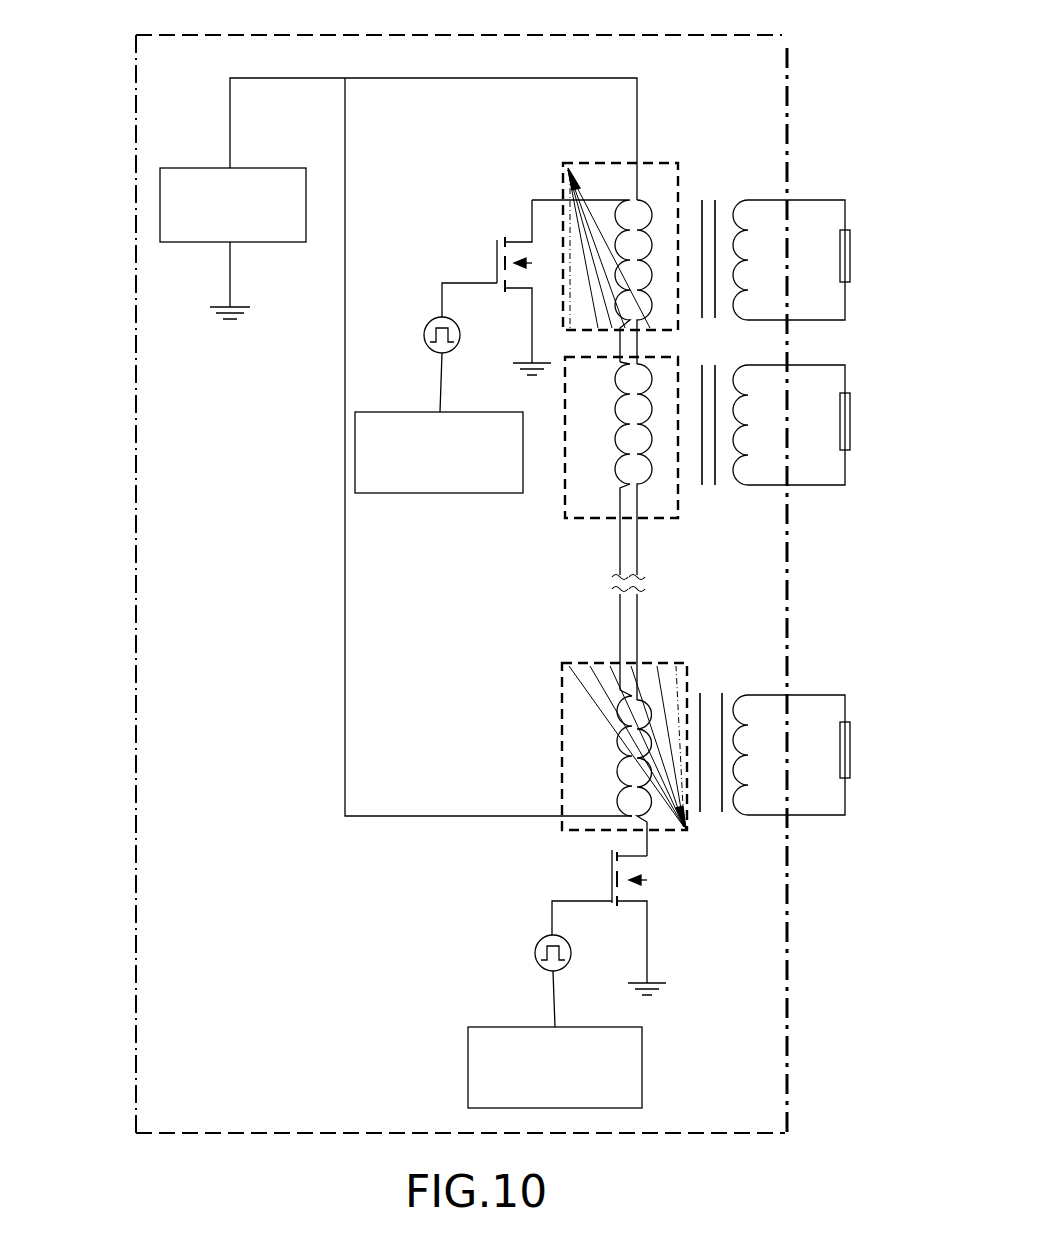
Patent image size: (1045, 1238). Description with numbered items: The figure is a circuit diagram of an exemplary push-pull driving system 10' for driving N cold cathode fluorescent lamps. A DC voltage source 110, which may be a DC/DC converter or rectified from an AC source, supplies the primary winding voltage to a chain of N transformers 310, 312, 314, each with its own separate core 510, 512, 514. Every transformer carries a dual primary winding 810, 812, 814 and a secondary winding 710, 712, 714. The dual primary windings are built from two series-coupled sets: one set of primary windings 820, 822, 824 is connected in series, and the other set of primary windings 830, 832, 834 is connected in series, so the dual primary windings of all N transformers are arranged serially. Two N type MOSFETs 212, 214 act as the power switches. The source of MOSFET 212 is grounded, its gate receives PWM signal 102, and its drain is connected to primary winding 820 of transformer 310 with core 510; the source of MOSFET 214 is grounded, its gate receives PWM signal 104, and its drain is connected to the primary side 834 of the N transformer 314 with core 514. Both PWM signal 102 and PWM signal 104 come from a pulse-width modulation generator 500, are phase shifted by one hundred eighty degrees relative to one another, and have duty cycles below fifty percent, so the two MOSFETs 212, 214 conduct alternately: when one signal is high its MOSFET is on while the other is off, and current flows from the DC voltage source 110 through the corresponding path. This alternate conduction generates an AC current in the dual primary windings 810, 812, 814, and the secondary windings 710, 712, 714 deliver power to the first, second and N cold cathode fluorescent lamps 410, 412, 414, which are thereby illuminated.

The push-pull driving system 10' is at (414, 573).
The DC voltage source 110 is at (186, 168).
The MOSFET 212 is at (492, 255).
The MOSFET 214 is at (604, 888).
The PWM signal 102 is at (426, 330).
The PWM signal 104 is at (534, 950).
The pulse-width modulation generator 500 is at (394, 408).
The dual primary winding 810 is at (562, 196).
The dual primary winding 812 is at (563, 500).
The dual primary winding 814 is at (560, 712).
The primary winding 820 is at (617, 248).
The primary winding 822 is at (616, 470).
The primary winding 824 is at (620, 722).
The primary winding 830 is at (651, 228).
The primary winding 832 is at (653, 456).
The primary winding 834 is at (654, 720).
The core 510 is at (708, 199).
The core 512 is at (711, 488).
The core 514 is at (712, 817).
The transformer 310 is at (827, 229).
The transformer 312 is at (831, 405).
The N transformer 314 is at (826, 722).
The secondary winding 710 is at (746, 252).
The secondary winding 712 is at (746, 420).
The secondary winding 714 is at (746, 750).
The cold cathode fluorescent lamp 410 is at (851, 256).
The cold cathode fluorescent lamp 412 is at (852, 420).
The cold cathode fluorescent lamp 414 is at (852, 748).